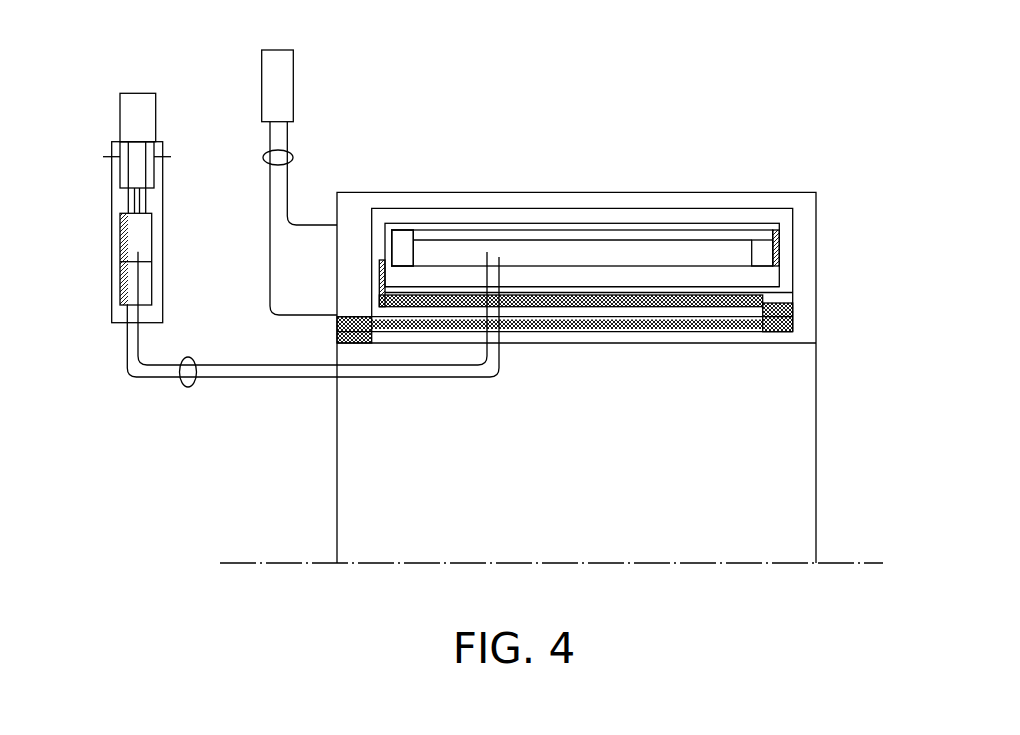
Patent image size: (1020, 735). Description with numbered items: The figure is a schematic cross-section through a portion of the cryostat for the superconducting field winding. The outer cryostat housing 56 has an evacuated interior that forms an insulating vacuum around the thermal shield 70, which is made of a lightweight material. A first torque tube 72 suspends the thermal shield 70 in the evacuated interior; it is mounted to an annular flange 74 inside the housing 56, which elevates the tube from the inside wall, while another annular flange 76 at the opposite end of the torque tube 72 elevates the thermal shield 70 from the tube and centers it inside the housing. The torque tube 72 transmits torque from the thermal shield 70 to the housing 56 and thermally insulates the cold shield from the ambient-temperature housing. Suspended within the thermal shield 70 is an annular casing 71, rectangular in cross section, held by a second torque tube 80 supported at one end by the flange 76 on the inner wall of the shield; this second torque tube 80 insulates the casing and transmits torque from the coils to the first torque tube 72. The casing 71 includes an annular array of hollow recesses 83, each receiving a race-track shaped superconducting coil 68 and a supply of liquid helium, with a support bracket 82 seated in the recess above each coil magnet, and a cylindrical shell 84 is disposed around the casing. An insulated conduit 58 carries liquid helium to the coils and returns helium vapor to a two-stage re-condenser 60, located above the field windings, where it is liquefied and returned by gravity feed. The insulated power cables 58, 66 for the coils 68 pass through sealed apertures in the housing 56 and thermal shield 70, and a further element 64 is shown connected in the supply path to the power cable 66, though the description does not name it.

The cryostat housing 56 is at (816, 228).
The insulated conduit 58 is at (187, 387).
The two-stage re-condenser 60 is at (110, 257).
The fluid reservoir 64 is at (258, 97).
The insulated power cable 66 is at (293, 157).
The superconducting coil 68 is at (400, 247).
The thermal shield 70 is at (792, 210).
The annular casing 71 is at (765, 278).
The first torque tube 72 is at (577, 328).
The annular flange 74 is at (337, 330).
The annular flange 76 is at (793, 308).
The second torque tube 80 is at (693, 290).
The support bracket 82 is at (399, 250).
The hollow recess 83 is at (577, 250).
The cylindrical shell 84 is at (650, 230).